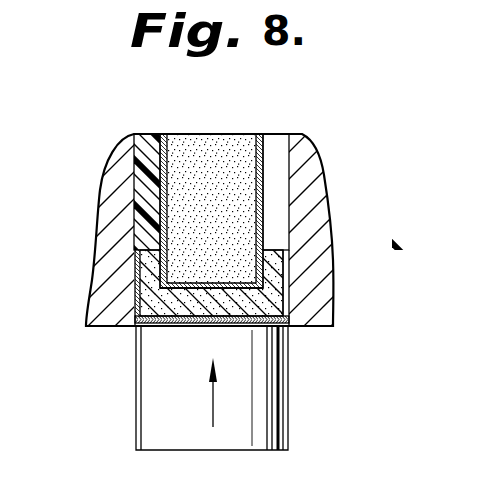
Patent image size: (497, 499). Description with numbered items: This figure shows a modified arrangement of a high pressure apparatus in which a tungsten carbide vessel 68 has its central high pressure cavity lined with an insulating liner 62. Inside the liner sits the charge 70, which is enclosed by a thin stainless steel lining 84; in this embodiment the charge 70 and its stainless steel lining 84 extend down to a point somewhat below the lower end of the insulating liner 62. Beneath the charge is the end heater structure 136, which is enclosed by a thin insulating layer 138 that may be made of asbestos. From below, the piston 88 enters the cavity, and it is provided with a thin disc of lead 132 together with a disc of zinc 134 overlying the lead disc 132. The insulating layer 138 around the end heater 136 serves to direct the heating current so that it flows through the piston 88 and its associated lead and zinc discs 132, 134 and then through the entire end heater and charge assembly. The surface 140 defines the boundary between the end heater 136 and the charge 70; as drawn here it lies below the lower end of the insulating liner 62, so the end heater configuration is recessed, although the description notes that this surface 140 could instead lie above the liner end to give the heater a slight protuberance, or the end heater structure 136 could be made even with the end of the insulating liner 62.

The insulating liner 62 is at (286, 172).
The tungsten carbide vessel 68 is at (314, 245).
The charge 70 is at (200, 162).
The stainless steel lining 84 is at (253, 146).
The piston 88 is at (247, 411).
The lead disc 132 is at (167, 327).
The zinc disc 134 is at (193, 318).
The end heater structure 136 is at (148, 298).
The insulating layer 138 is at (293, 300).
The surface 140 is at (213, 283).